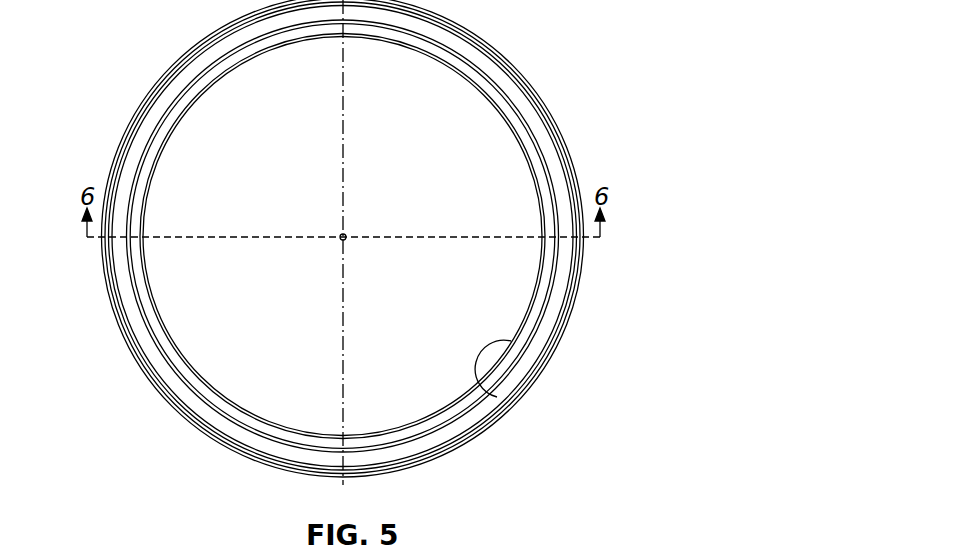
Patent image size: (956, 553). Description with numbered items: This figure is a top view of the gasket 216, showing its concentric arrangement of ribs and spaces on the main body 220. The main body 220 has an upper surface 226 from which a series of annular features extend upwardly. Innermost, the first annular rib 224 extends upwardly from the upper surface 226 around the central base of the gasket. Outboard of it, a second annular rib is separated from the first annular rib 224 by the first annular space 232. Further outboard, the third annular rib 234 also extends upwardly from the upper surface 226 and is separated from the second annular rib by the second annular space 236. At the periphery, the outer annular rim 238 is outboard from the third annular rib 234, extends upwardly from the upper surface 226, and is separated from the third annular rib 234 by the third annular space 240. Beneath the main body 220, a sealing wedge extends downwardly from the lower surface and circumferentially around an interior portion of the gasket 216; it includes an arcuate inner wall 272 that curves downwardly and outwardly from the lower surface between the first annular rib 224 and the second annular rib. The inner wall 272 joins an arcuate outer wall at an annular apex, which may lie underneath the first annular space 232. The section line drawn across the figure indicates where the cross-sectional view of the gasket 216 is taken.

The gasket 216 is at (109, 82).
The main body 220 is at (495, 143).
The arcuate inner wall 272 is at (490, 207).
The first annular space 232 is at (541, 300).
The upper surface 226 is at (535, 332).
The third annular rib 234 is at (550, 360).
The second annular space 236 is at (523, 365).
The first annular rib 224 is at (505, 398).
The outer annular rim 238 is at (480, 438).
The third annular space 240 is at (415, 460).